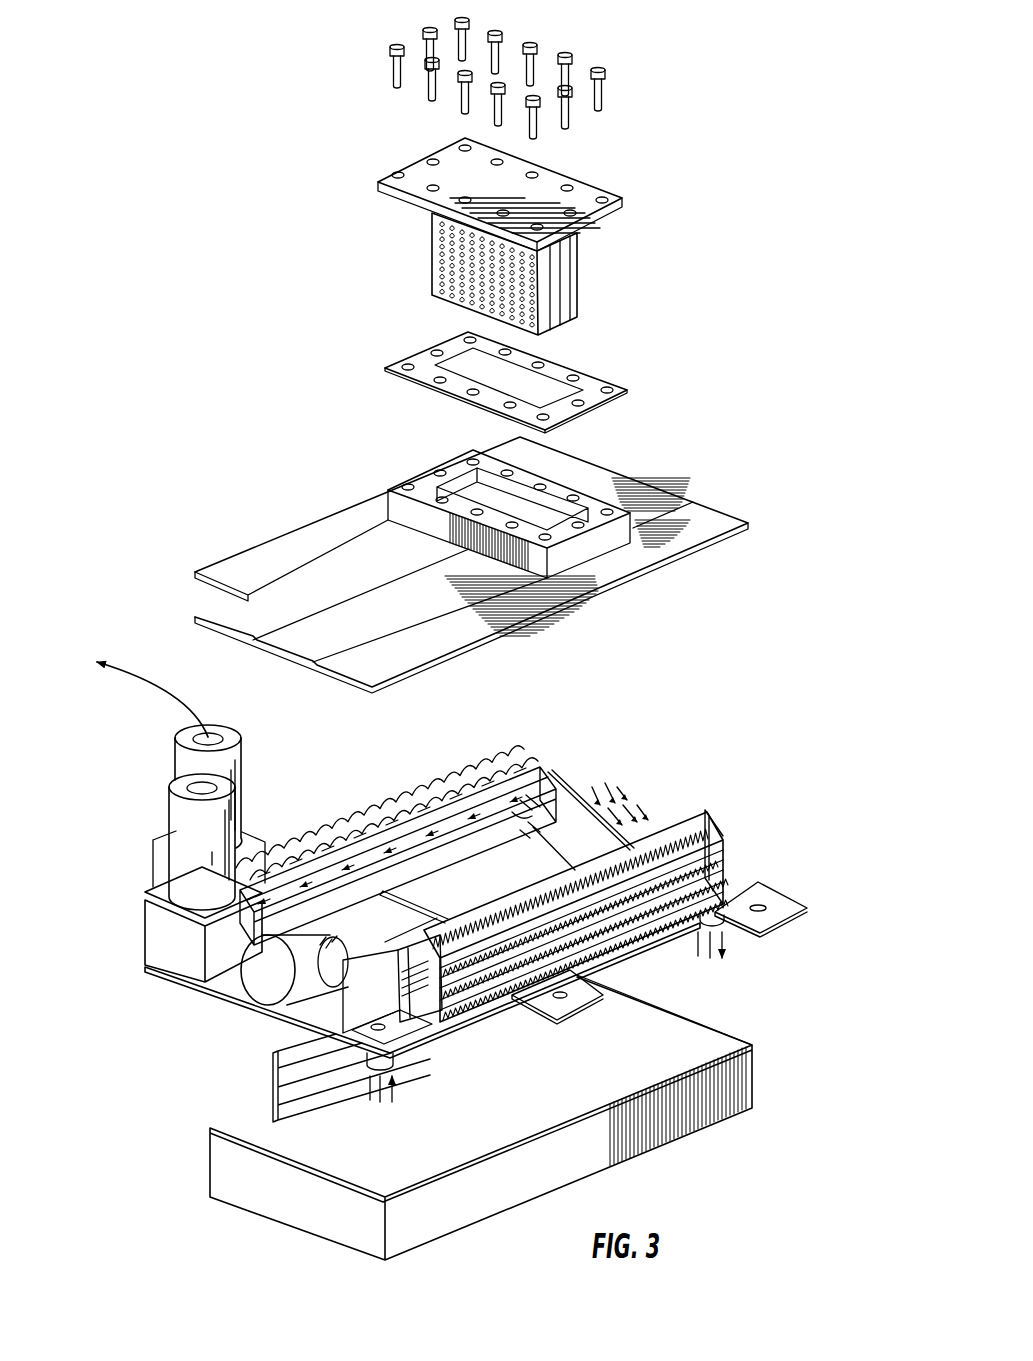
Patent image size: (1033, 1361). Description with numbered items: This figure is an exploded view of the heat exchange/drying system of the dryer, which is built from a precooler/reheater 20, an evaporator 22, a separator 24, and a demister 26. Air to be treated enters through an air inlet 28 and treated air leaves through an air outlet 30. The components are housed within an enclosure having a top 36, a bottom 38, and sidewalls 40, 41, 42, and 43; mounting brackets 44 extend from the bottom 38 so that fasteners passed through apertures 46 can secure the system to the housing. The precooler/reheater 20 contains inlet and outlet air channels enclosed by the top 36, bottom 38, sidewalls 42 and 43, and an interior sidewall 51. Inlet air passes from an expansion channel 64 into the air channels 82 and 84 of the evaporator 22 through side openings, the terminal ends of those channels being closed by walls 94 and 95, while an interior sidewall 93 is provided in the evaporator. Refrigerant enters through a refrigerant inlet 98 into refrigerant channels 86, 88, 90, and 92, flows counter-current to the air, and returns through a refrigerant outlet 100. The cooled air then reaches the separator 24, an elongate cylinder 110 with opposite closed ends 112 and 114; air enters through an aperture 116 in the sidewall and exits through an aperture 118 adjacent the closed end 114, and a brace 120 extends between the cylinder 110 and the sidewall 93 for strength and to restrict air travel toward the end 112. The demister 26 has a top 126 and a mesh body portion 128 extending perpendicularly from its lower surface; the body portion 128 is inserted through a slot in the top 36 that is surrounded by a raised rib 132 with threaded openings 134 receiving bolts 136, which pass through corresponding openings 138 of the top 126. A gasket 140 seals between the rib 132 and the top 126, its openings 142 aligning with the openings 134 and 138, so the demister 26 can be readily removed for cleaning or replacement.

The precooler/reheater 20 is at (435, 824).
The evaporator 22 is at (602, 917).
The separator 24 is at (225, 995).
The demister 26 is at (652, 253).
The air inlet 28 is at (184, 780).
The air outlet 30 is at (230, 767).
The top 36 is at (471, 550).
The bottom 38 is at (182, 980).
The sidewall 40 is at (282, 1197).
The sidewall 41 is at (561, 1170).
The sidewall 42 is at (664, 1044).
The sidewall 43 is at (272, 1083).
The mounting brackets 44 is at (686, 962).
The apertures 46 is at (758, 902).
The interior sidewall 51 is at (340, 877).
The expansion channel 64 is at (634, 782).
The air channel 82 is at (720, 847).
The air channel 84 is at (727, 882).
The refrigerant channel 86 is at (717, 820).
The refrigerant channel 88 is at (398, 1003).
The refrigerant channel 90 is at (727, 870).
The refrigerant channel 92 is at (626, 948).
The interior sidewall 93 is at (393, 935).
The wall 94 is at (407, 962).
The wall 95 is at (407, 995).
The refrigerant inlet 98 is at (393, 1066).
The refrigerant outlet 100 is at (727, 933).
The elongate cylinder 110 is at (425, 883).
The closed end 112 is at (282, 981).
The closed end 114 is at (510, 850).
The aperture 116 is at (320, 937).
The aperture 118 is at (433, 887).
The brace 120 is at (400, 910).
The top 126 is at (529, 194).
The body portion 128 is at (432, 250).
The raised rib 132 is at (519, 524).
The threaded openings 134 is at (417, 492).
The bolts 136 is at (532, 43).
The openings 138 is at (532, 172).
The gasket 140 is at (533, 370).
The openings 142 is at (437, 350).